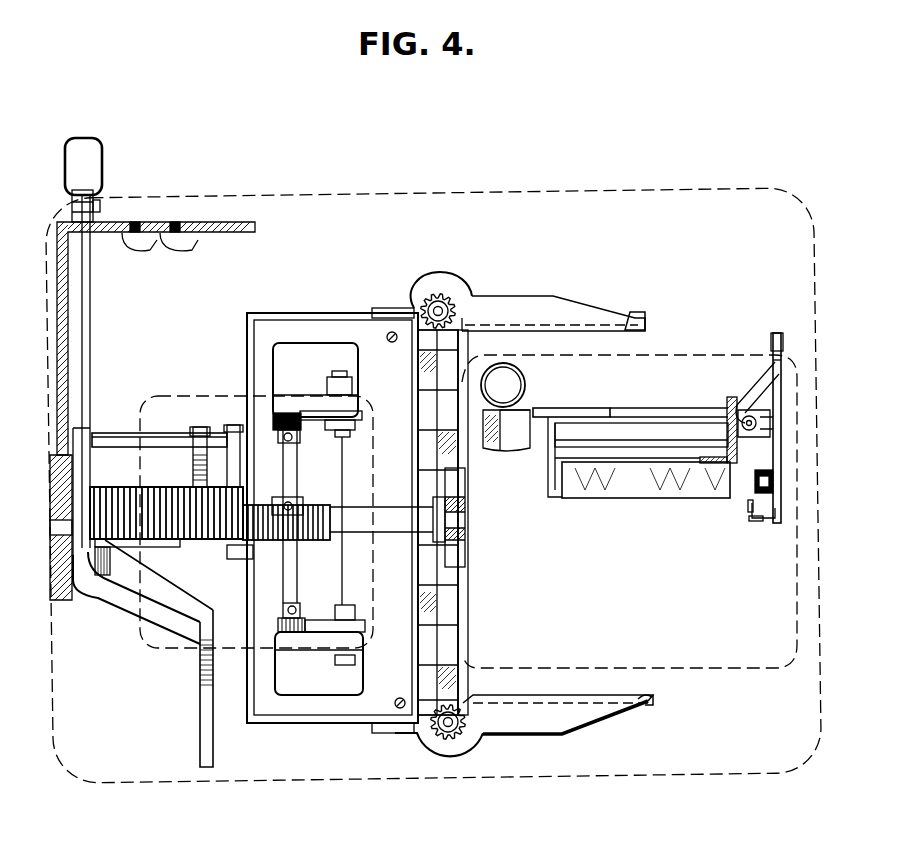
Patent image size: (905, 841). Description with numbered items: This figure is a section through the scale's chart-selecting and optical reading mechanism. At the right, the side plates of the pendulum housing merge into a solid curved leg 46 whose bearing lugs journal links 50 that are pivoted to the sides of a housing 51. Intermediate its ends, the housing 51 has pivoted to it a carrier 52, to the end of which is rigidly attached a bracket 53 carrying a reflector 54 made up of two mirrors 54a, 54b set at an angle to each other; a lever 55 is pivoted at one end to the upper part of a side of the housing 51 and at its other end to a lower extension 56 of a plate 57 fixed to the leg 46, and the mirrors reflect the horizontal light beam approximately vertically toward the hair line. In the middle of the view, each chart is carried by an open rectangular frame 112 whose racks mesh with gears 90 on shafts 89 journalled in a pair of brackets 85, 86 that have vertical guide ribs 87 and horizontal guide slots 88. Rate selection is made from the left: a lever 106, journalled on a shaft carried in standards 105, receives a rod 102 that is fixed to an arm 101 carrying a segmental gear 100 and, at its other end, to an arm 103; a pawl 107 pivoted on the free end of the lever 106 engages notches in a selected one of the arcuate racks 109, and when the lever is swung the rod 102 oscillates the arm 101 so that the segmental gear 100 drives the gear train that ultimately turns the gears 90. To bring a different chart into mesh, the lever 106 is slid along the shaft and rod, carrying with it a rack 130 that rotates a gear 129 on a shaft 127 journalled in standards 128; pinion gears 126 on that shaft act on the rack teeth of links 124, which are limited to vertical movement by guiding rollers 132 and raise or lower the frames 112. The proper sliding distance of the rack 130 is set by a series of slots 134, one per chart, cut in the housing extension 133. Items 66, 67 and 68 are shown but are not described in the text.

The curved leg 46 is at (727, 395).
The links 50 is at (773, 463).
The housing 51 is at (642, 432).
The carrier 52 is at (620, 410).
The bracket 53 is at (550, 408).
The reflector 54 is at (508, 422).
The mirror 54a is at (490, 450).
The mirror 54b is at (520, 437).
The lever 55 is at (748, 393).
The lower extension 56 is at (770, 355).
The plate 57 is at (723, 460).
The bracket plate 66 is at (775, 519).
The pin 67 is at (753, 522).
The pin 68 is at (746, 508).
The bracket 85 is at (552, 730).
The bracket 86 is at (523, 304).
The vertical guide ribs 87 is at (385, 308).
The horizontal guide slots 88 is at (628, 312).
The shafts 89 is at (440, 309).
The gears 90 is at (420, 300).
The segmental gear 100 is at (195, 470).
The arm 101 is at (77, 472).
The rod 102 is at (100, 445).
The arm 103 is at (228, 428).
The standards 105 is at (66, 600).
The lever 106 is at (68, 325).
The pawl 107 is at (75, 212).
The arcuate racks 109 is at (173, 220).
The open rectangular frame 112 is at (467, 663).
The links 124 is at (318, 617).
The pinion gear 126 is at (283, 412).
The shaft 127 is at (293, 463).
The standards 128 is at (283, 352).
The gear 129 is at (343, 538).
The rack teeth 130 is at (152, 540).
The guiding rollers 132 is at (358, 412).
The housing extension 133 is at (68, 290).
The slots 134 is at (160, 255).